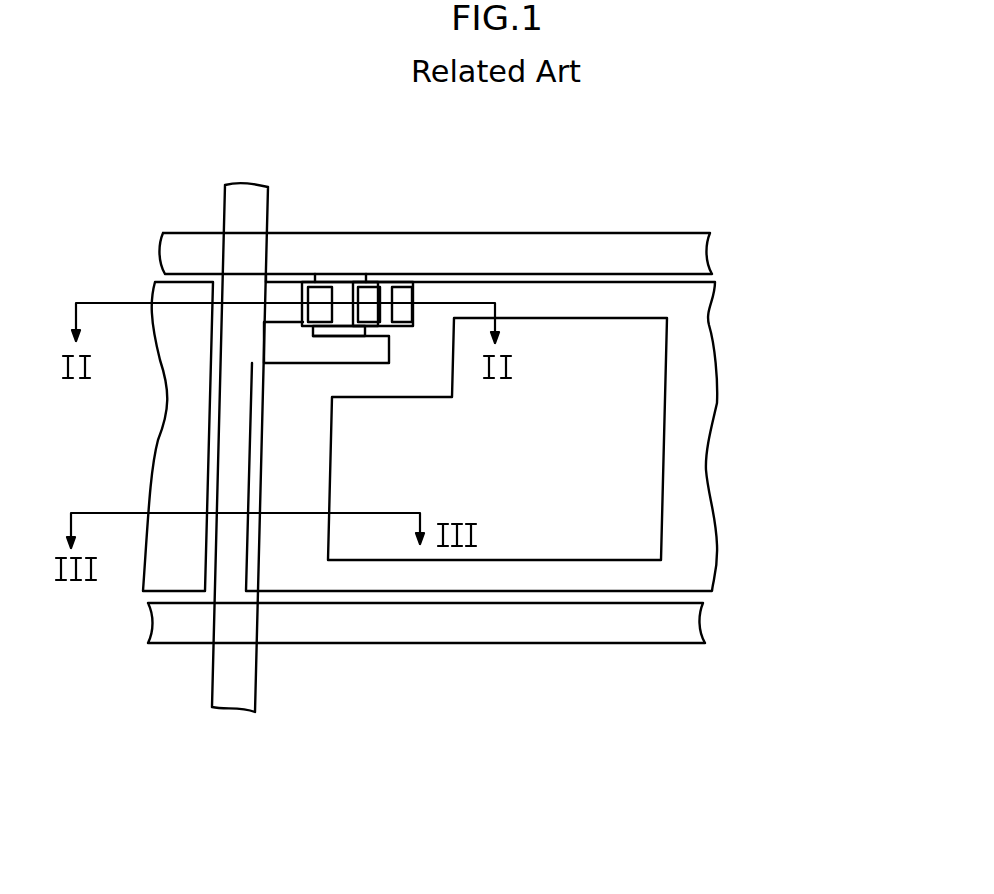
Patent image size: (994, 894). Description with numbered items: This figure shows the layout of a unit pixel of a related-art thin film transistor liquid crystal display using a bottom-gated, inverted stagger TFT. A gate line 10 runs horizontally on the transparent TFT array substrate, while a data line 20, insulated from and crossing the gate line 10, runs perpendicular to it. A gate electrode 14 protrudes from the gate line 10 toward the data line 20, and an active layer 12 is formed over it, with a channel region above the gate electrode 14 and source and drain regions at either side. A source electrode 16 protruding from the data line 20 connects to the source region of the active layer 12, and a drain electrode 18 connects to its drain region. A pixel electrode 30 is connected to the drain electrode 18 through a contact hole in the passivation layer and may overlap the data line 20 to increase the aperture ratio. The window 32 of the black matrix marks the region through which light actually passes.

The gate line 10 is at (608, 248).
The active layer 12 is at (348, 277).
The gate electrode 14 is at (365, 336).
The source electrode 16 is at (277, 273).
The drain electrode 18 is at (413, 283).
The data line 20 is at (223, 680).
The pixel electrode 30 is at (715, 355).
The window 32 is at (638, 447).